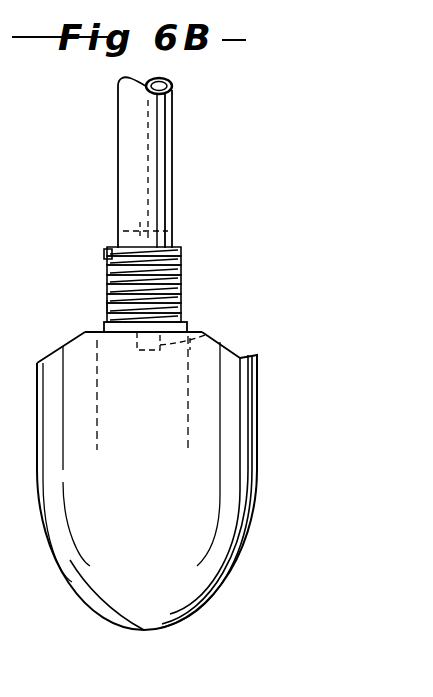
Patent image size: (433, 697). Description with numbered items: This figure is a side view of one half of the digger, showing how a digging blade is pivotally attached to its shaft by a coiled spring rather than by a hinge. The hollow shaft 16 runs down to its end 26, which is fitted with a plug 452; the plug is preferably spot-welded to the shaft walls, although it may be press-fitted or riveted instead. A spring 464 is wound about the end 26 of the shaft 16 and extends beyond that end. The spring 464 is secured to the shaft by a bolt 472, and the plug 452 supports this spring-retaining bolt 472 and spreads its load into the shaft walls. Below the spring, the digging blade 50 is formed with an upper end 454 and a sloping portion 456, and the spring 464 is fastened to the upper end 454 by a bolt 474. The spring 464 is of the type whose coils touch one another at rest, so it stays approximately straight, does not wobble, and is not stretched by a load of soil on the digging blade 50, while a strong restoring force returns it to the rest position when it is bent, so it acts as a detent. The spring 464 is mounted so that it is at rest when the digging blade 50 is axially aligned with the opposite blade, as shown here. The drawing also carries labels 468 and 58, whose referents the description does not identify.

The hollow shaft 16 is at (173, 93).
The end of hollow shaft 26 is at (118, 212).
The plug 452 is at (173, 200).
The spring 464 is at (181, 265).
The bolt 472 is at (106, 250).
The spring coil portion 468 is at (108, 306).
The upper end of digging blade 454 is at (88, 338).
The bolt 474 is at (222, 342).
The digging blade 50 is at (160, 487).
The sloping portion 456 is at (240, 353).
The body bottom end 58 is at (75, 583).